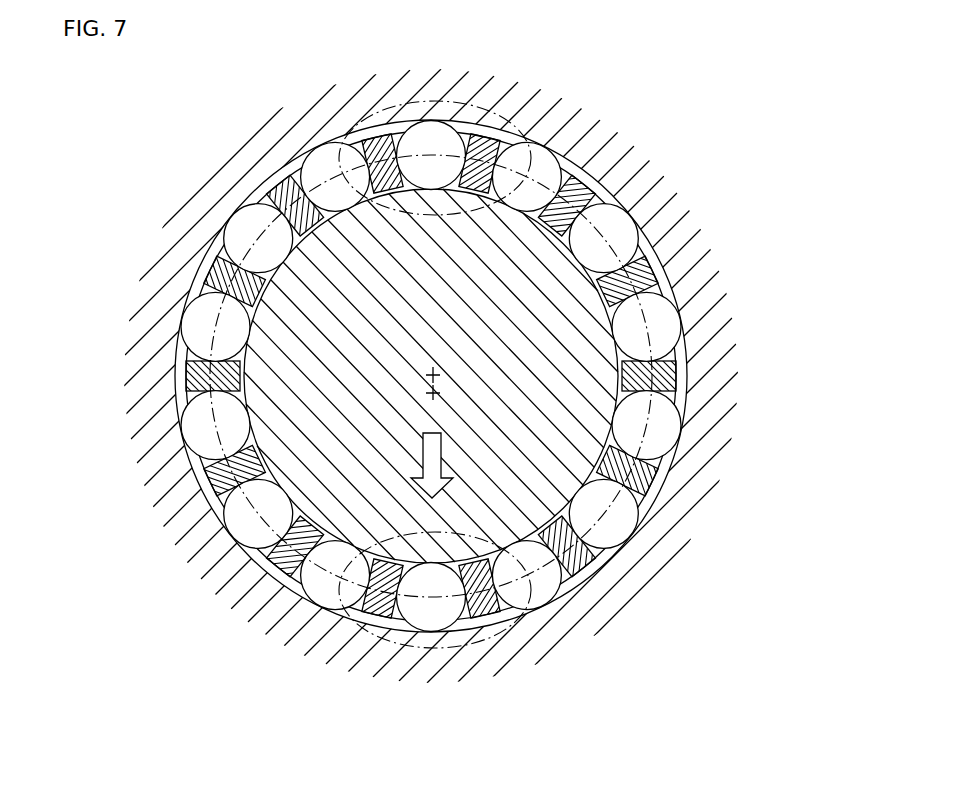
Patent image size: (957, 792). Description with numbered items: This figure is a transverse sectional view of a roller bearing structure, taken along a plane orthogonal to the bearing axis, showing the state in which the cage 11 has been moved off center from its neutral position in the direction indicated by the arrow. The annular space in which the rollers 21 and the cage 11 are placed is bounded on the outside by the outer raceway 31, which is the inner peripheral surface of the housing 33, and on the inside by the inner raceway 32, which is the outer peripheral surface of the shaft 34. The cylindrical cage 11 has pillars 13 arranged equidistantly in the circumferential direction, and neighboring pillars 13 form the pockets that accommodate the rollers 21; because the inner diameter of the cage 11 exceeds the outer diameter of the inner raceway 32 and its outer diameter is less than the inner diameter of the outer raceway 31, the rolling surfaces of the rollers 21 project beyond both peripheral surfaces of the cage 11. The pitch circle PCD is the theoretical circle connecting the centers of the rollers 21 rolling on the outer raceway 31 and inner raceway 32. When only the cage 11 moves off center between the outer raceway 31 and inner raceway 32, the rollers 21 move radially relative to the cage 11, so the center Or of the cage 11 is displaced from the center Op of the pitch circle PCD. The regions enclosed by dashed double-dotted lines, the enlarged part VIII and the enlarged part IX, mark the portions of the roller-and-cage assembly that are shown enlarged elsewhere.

The cage 11 is at (454, 398).
The pillars 13 is at (482, 396).
The rollers 21 is at (628, 538).
The outer raceway 31 is at (598, 164).
The inner raceway 32 is at (650, 283).
The housing 33 is at (689, 226).
The shaft 34 is at (580, 338).
The pitch circle PCD is at (545, 600).
The enlarged part IX is at (435, 152).
The enlarged part VIII is at (435, 595).
The center of the pitch circle Op is at (428, 392).
The center of the cage Or is at (428, 392).